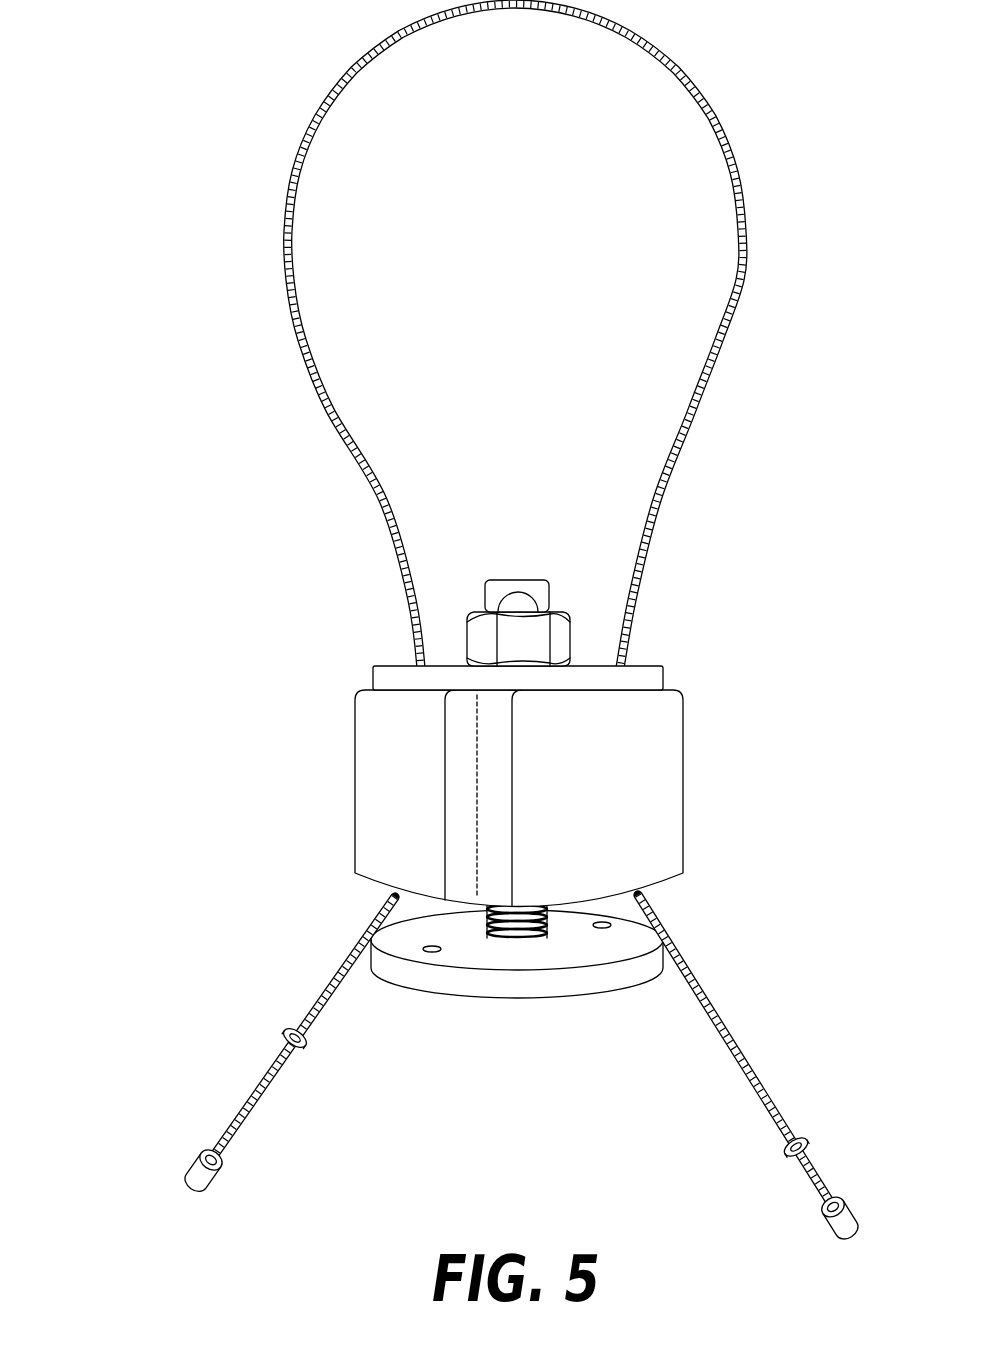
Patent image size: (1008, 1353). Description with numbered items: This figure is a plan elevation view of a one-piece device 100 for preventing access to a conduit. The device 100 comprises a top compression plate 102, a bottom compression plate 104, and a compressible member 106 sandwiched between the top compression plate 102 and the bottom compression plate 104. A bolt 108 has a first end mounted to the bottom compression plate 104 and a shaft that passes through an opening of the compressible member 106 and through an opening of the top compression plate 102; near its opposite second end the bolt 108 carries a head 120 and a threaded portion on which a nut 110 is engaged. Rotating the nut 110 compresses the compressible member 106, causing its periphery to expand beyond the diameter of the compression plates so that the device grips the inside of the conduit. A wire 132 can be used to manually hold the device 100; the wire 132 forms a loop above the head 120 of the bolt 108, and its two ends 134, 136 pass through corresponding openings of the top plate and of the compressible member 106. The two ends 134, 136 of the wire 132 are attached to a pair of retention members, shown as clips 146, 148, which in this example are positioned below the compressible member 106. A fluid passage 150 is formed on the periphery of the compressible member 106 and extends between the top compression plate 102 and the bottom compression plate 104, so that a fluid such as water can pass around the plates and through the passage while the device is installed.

The device for preventing access to a conduit 100 is at (105, 331).
The top compression plate 102 is at (368, 672).
The bottom compression plate 104 is at (445, 1006).
The compressible member 106 is at (477, 798).
The bolt 108 is at (551, 925).
The nut 110 is at (575, 636).
The head 120 is at (527, 577).
The wire 132 is at (321, 413).
The first end of the wire 134 is at (247, 1202).
The second end of the wire 136 is at (789, 1241).
The clip 146 is at (229, 1177).
The clip 148 is at (823, 1244).
The fluid passage 150 is at (494, 888).